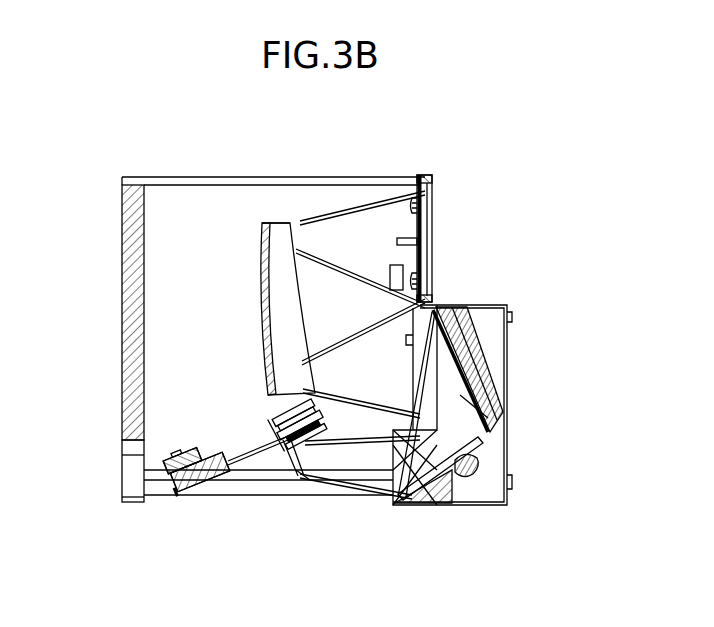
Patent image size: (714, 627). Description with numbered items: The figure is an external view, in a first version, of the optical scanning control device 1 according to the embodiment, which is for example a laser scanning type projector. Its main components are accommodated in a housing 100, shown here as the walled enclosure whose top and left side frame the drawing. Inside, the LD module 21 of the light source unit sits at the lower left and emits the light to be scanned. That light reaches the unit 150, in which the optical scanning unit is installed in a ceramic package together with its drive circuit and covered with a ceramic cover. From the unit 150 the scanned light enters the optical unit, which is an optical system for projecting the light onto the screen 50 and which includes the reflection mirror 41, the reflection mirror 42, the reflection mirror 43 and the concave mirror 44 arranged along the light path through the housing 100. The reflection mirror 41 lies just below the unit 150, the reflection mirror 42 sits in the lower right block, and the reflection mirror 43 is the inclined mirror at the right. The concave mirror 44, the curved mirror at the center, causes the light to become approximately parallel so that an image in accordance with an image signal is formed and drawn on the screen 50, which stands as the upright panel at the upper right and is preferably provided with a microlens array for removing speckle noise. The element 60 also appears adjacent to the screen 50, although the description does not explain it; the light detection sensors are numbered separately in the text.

The optical scanning control device 1 is at (137, 151).
The housing 100 is at (344, 177).
The concave mirror 44 is at (282, 232).
The screen 50 is at (433, 226).
The support member 60 is at (408, 262).
The reflection mirror 43 is at (470, 363).
The reflection mirror 42 is at (479, 442).
The reflection mirror 41 is at (291, 478).
The unit 150 is at (268, 408).
The LD module 21 is at (205, 490).